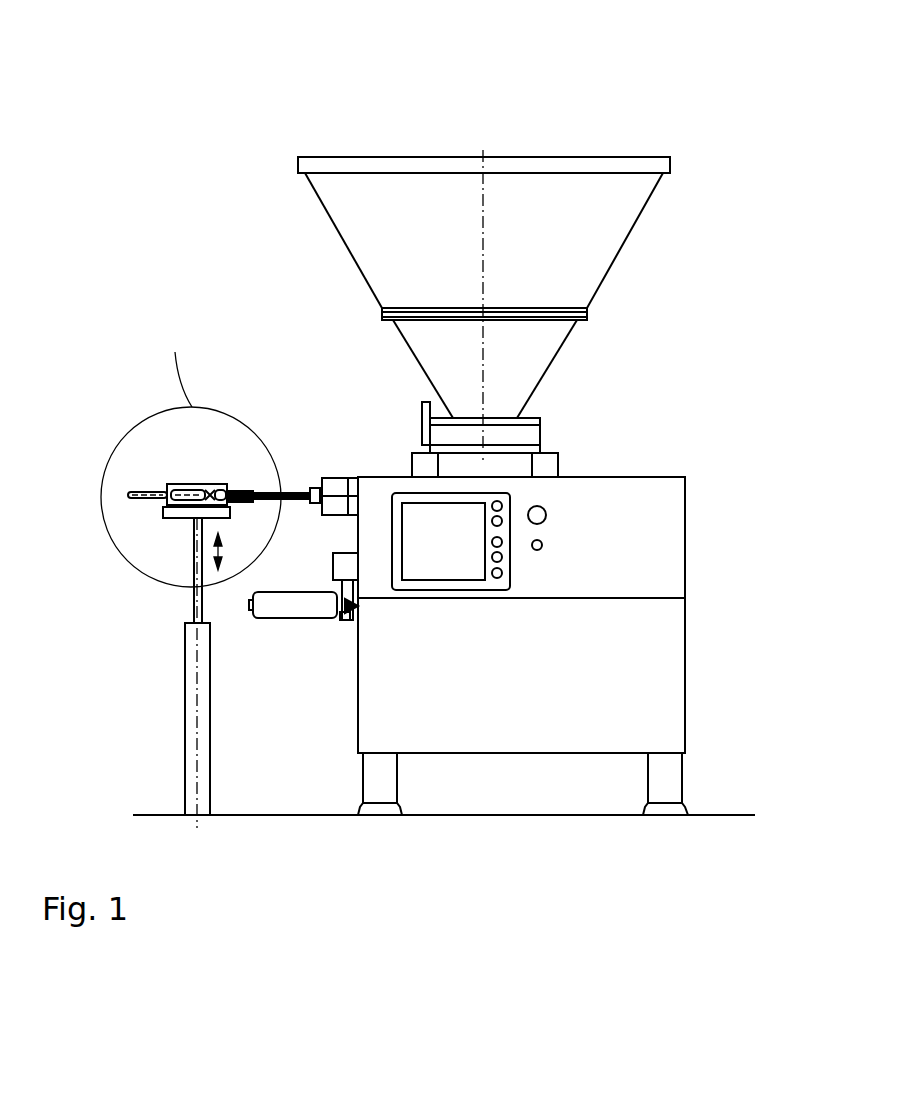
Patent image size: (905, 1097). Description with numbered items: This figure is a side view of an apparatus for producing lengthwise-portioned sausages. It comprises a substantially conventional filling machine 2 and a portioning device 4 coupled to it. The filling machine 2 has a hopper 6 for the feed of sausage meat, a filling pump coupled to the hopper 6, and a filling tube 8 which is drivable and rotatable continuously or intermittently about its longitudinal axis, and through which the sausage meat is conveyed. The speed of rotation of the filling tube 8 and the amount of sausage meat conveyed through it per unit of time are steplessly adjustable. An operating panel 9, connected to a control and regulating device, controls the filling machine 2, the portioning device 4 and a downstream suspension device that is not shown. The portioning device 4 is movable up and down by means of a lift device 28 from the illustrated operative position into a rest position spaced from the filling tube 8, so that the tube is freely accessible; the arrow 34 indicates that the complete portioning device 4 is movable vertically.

The filling machine 2 is at (650, 435).
The portioning device 4 is at (208, 313).
The hopper 6 is at (555, 130).
The filling tube 8 is at (297, 490).
The operating panel 9 is at (530, 573).
The lift device 28 is at (152, 677).
The arrow 34 is at (215, 550).